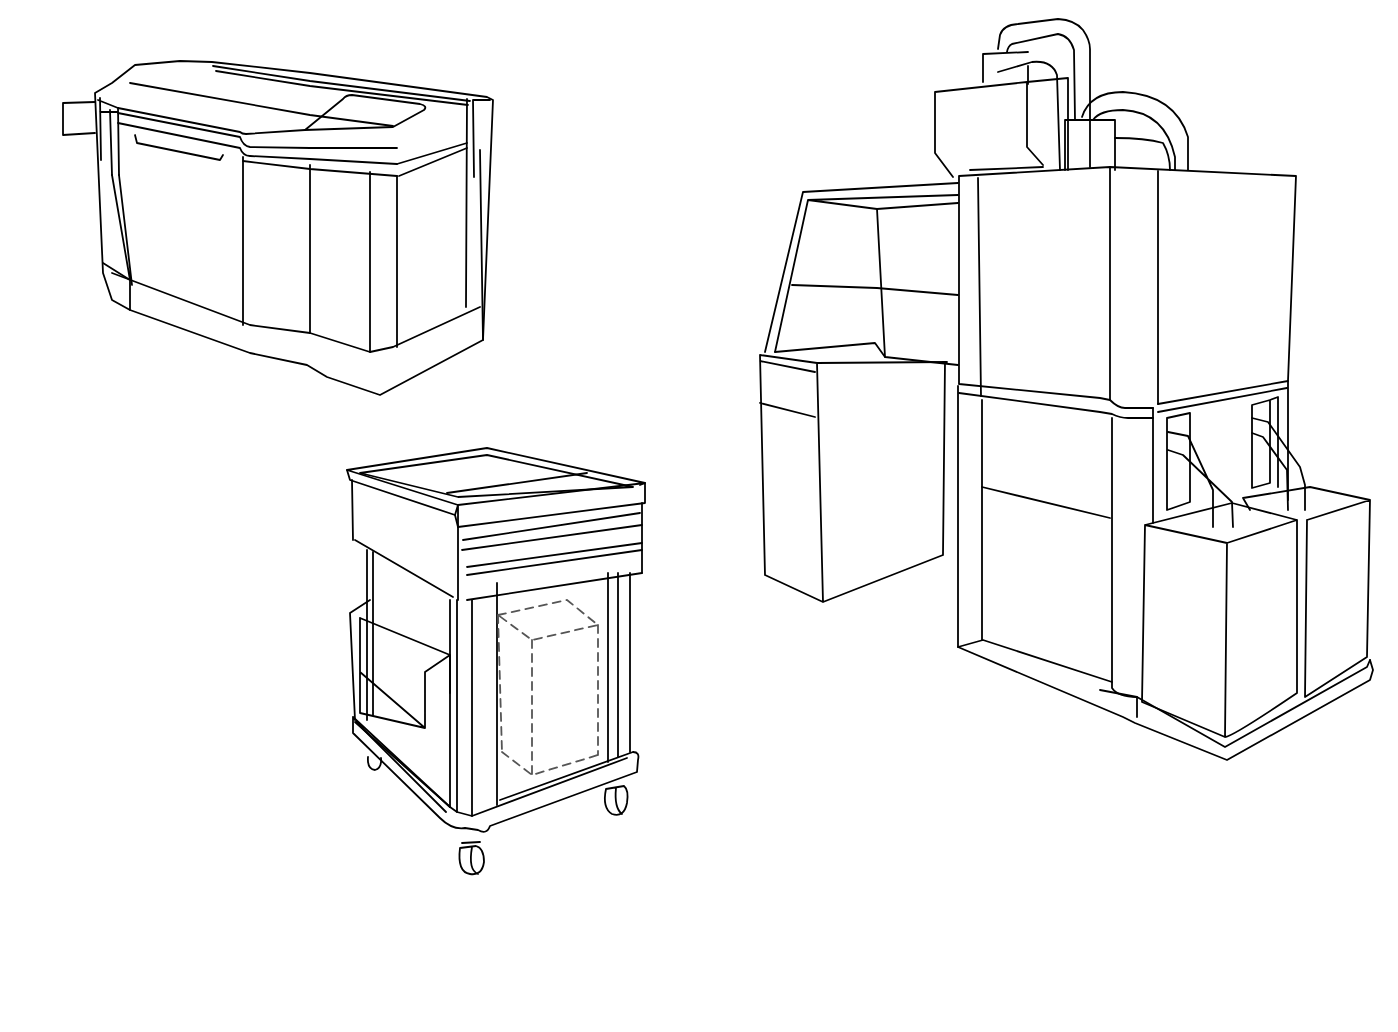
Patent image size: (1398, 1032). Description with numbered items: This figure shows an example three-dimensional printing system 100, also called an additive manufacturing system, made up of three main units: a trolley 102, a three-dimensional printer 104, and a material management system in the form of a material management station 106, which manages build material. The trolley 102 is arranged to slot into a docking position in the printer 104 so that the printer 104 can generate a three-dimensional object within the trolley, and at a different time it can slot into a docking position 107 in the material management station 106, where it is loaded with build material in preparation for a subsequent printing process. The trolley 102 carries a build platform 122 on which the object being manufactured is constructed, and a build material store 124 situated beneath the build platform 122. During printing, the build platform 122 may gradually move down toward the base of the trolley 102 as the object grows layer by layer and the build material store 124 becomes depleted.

The 3D printing system 100 is at (680, 158).
The trolley 102 is at (546, 437).
The 3D printer 104 is at (492, 147).
The material management station 106 is at (1258, 167).
The docking position 107 is at (903, 592).
The build platform 122 is at (468, 478).
The build material store 124 is at (595, 693).